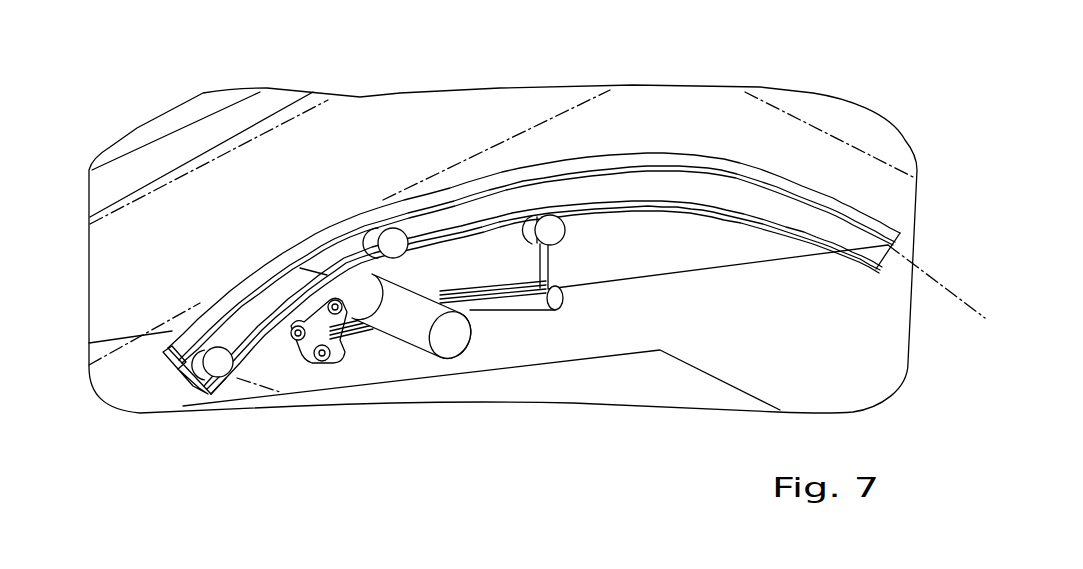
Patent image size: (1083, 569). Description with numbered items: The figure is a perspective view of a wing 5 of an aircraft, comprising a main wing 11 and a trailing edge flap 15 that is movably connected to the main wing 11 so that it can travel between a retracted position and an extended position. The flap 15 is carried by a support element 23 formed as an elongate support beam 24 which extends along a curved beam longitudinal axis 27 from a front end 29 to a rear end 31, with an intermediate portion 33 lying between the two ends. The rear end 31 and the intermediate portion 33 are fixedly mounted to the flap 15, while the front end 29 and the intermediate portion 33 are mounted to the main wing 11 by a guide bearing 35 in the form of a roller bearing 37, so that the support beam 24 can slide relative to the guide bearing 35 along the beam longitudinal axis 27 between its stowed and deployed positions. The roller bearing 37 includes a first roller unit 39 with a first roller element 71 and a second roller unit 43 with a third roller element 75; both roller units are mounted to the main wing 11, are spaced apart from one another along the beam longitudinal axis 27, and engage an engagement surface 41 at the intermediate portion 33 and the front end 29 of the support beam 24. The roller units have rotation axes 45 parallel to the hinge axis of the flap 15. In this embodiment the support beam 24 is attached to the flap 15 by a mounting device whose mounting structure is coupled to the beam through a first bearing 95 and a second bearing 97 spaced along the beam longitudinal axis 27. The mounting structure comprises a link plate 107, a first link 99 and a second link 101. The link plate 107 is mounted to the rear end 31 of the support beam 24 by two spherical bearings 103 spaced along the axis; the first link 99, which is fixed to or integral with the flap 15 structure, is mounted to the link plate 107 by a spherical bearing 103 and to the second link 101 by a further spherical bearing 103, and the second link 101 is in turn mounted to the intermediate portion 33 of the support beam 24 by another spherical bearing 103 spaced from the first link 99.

The wing 5 is at (118, 128).
The main wing 11 is at (626, 135).
The flap 15 is at (457, 340).
The support element 23 is at (537, 230).
The elongate support beam 24 is at (683, 190).
The beam longitudinal axis 27 is at (957, 290).
The front end 29 is at (847, 233).
The rear end 31 is at (192, 340).
The intermediate portion 33 is at (477, 183).
The guide bearing 35 is at (145, 423).
The roller bearing 37 is at (158, 372).
The first roller unit 39 is at (195, 428).
The first roller element 71 is at (213, 392).
The engagement surface 41 is at (357, 262).
The second roller unit 43 is at (377, 193).
The third roller element 75 is at (393, 236).
The rotation axes 45 is at (447, 270).
The first bearing 95 is at (325, 373).
The second bearing 97 is at (573, 238).
The first link 99 is at (500, 308).
The second link 101 is at (553, 263).
The spherical bearing 103 is at (325, 275).
The link plate 107 is at (283, 300).